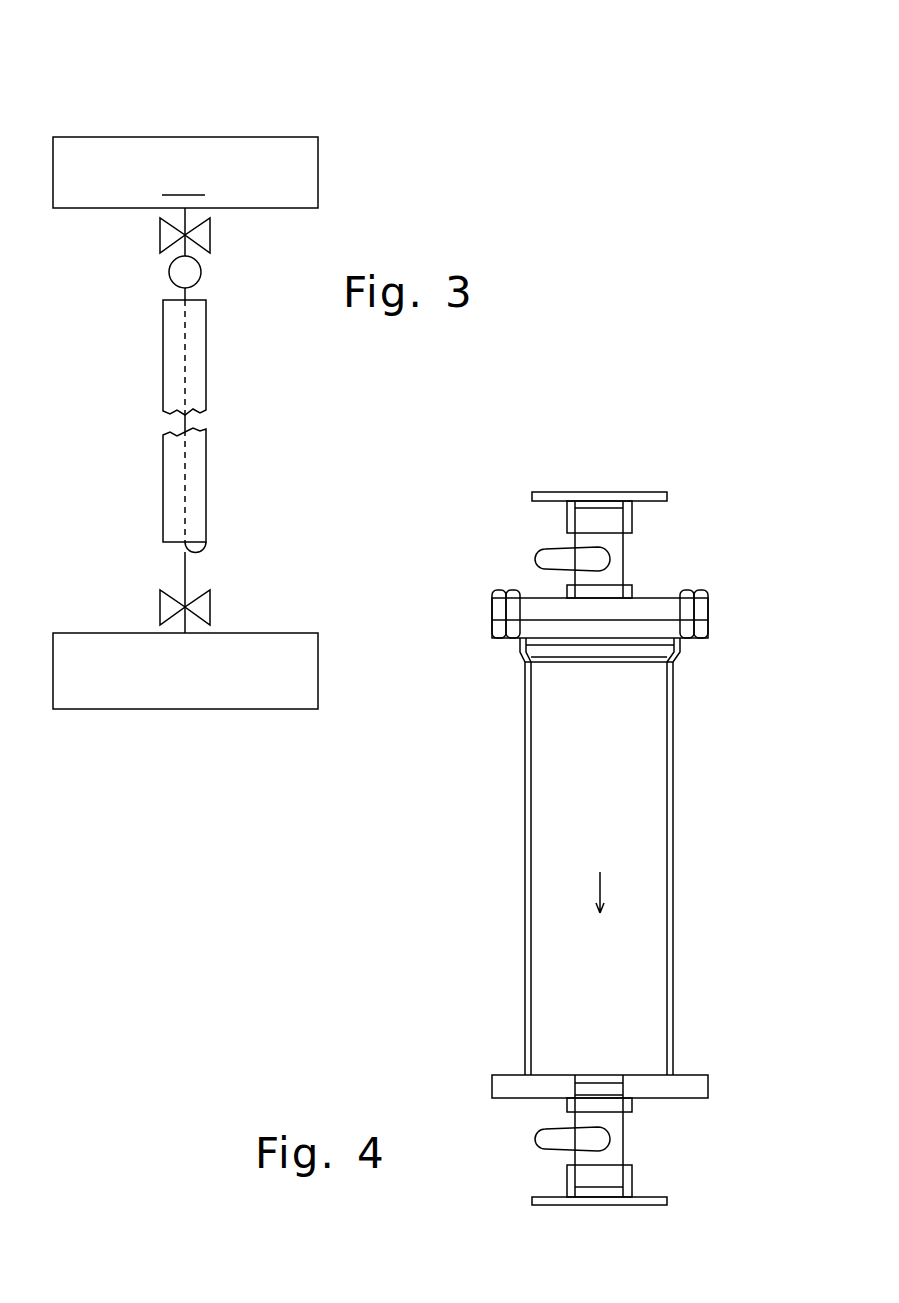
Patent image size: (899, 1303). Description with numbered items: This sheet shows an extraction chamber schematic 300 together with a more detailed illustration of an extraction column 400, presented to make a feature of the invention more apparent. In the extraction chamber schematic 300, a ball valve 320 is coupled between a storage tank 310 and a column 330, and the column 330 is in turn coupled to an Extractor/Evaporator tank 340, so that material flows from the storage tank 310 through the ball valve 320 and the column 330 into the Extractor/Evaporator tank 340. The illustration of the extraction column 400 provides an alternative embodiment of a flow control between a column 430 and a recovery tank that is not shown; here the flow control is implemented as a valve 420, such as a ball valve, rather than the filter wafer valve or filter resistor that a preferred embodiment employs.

In FIG. 3, the extraction chamber schematic 300 is at (379, 122).
In FIG. 3, the storage tank 310 is at (185, 172).
In FIG. 3, the ball valve 320 is at (169, 273).
In FIG. 3, the column 330 is at (172, 379).
In FIG. 3, the Extractor/Evaporator tank 340 is at (185, 671).
In FIG. 4, the extraction column 400 is at (660, 460).
In FIG. 4, the valve 420 is at (612, 1139).
In FIG. 4, the column 430 is at (525, 885).